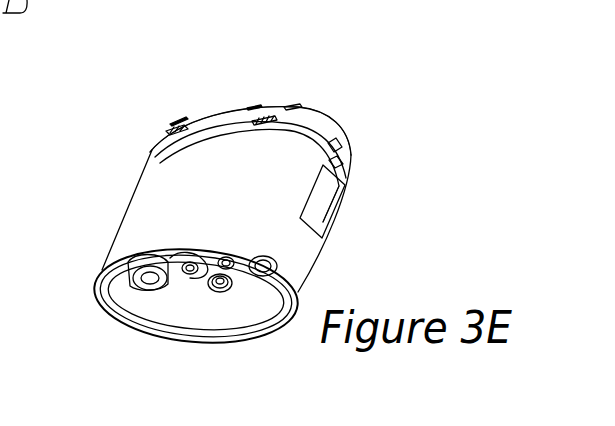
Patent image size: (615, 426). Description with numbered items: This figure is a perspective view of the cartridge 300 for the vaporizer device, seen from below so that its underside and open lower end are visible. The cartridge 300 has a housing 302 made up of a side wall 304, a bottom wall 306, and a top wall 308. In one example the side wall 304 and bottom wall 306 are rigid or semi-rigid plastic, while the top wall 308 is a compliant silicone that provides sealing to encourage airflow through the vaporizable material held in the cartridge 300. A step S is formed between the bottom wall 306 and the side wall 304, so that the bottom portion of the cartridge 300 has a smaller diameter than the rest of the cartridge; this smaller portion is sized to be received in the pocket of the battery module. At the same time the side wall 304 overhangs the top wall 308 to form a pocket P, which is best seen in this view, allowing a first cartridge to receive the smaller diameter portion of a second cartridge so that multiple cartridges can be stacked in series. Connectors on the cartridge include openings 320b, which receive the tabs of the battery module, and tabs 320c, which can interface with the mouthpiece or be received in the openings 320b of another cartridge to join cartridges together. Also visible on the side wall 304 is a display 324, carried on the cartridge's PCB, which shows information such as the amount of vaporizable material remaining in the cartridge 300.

The cartridge 300 is at (244, 177).
The housing 302 is at (122, 179).
The side wall 304 is at (124, 212).
The bottom wall 306 is at (300, 107).
The top wall 308 is at (200, 292).
The openings 320b is at (190, 124).
The tabs 320c is at (253, 119).
The display 324 is at (318, 203).
The step S is at (360, 170).
The pocket P is at (135, 301).